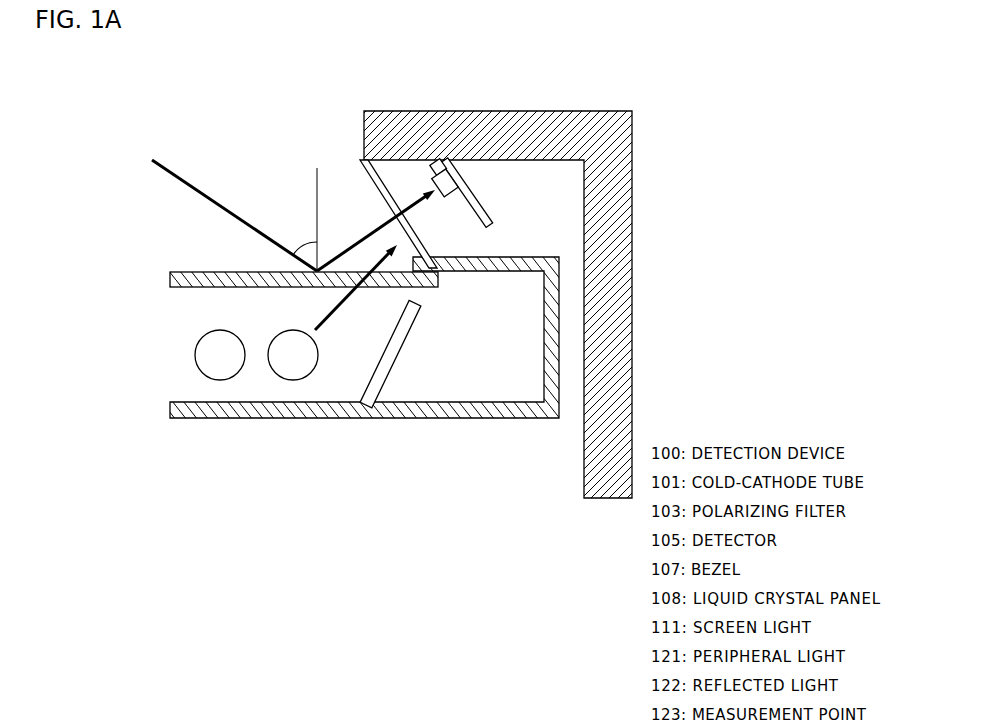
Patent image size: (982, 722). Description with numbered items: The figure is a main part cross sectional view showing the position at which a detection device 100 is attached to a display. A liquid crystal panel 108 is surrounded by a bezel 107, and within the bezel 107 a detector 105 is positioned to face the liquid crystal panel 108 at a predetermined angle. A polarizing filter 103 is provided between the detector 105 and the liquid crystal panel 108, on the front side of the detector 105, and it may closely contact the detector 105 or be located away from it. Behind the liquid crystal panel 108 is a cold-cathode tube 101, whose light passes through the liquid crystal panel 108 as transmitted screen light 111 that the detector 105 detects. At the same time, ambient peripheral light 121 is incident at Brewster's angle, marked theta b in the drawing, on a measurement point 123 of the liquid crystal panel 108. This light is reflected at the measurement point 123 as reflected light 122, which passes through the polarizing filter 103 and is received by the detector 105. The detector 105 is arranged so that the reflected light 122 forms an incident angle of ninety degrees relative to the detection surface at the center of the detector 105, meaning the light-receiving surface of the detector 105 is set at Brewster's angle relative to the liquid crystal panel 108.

The detection device 100 is at (129, 95).
The cold-cathode tube 101 is at (283, 338).
The polarizing filter 103 is at (428, 248).
The detector 105 is at (446, 192).
The bezel 107 is at (538, 112).
The liquid crystal panel 108 is at (188, 274).
The transmitted light 111 is at (335, 312).
The peripheral light 121 is at (172, 176).
The reflected light 122 is at (368, 242).
The measurement point 123 is at (317, 273).